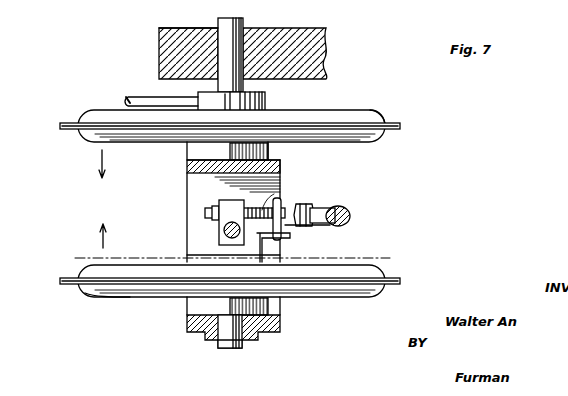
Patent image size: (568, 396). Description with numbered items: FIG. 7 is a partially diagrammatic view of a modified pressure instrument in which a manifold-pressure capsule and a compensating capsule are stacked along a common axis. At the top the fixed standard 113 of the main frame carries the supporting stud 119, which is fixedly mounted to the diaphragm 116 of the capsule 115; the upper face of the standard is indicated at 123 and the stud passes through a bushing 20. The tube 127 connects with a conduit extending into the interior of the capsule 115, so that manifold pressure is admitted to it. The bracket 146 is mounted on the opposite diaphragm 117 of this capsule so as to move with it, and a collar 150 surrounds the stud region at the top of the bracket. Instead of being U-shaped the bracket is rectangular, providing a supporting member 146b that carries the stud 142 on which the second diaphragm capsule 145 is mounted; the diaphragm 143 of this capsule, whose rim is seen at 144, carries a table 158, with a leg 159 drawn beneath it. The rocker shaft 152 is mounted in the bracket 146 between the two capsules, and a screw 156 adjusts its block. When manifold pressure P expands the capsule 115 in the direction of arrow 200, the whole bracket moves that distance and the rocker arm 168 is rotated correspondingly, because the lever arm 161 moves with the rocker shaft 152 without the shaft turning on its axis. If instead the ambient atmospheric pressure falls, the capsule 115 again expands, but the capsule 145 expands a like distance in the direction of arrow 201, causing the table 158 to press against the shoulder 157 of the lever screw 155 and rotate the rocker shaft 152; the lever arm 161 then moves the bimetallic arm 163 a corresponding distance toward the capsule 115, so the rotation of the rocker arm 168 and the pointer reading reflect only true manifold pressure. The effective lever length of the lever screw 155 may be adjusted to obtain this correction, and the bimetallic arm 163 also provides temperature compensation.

The fixed standard 113 is at (290, 30).
The supporting stud 119 is at (237, 20).
The top surface of block 123 is at (194, 18).
The bushing 20 is at (266, 103).
The tube 127 is at (136, 97).
The diaphragm 116 is at (340, 112).
The capsule 115 is at (394, 113).
The diaphragm 117 is at (390, 129).
The arrow 200 is at (100, 158).
The arrow 201 is at (100, 232).
The collar 150 is at (200, 153).
The bracket 146 is at (283, 163).
The adjusting screw 156 is at (212, 207).
The rocker shaft 152 is at (219, 228).
The lever screw 155 is at (284, 194).
The table 158 is at (292, 236).
The bracket leg 159 is at (258, 243).
The shoulder 157 is at (316, 204).
The bimetallic arm 163 is at (330, 208).
The rocker arm 168 is at (350, 216).
The lever arm 161 is at (332, 226).
The diaphragm 143 is at (76, 267).
The lower disc rim 144 is at (92, 295).
The diaphragm capsule 145 is at (392, 274).
The supporting member 146b is at (282, 323).
The stud 142 is at (215, 343).